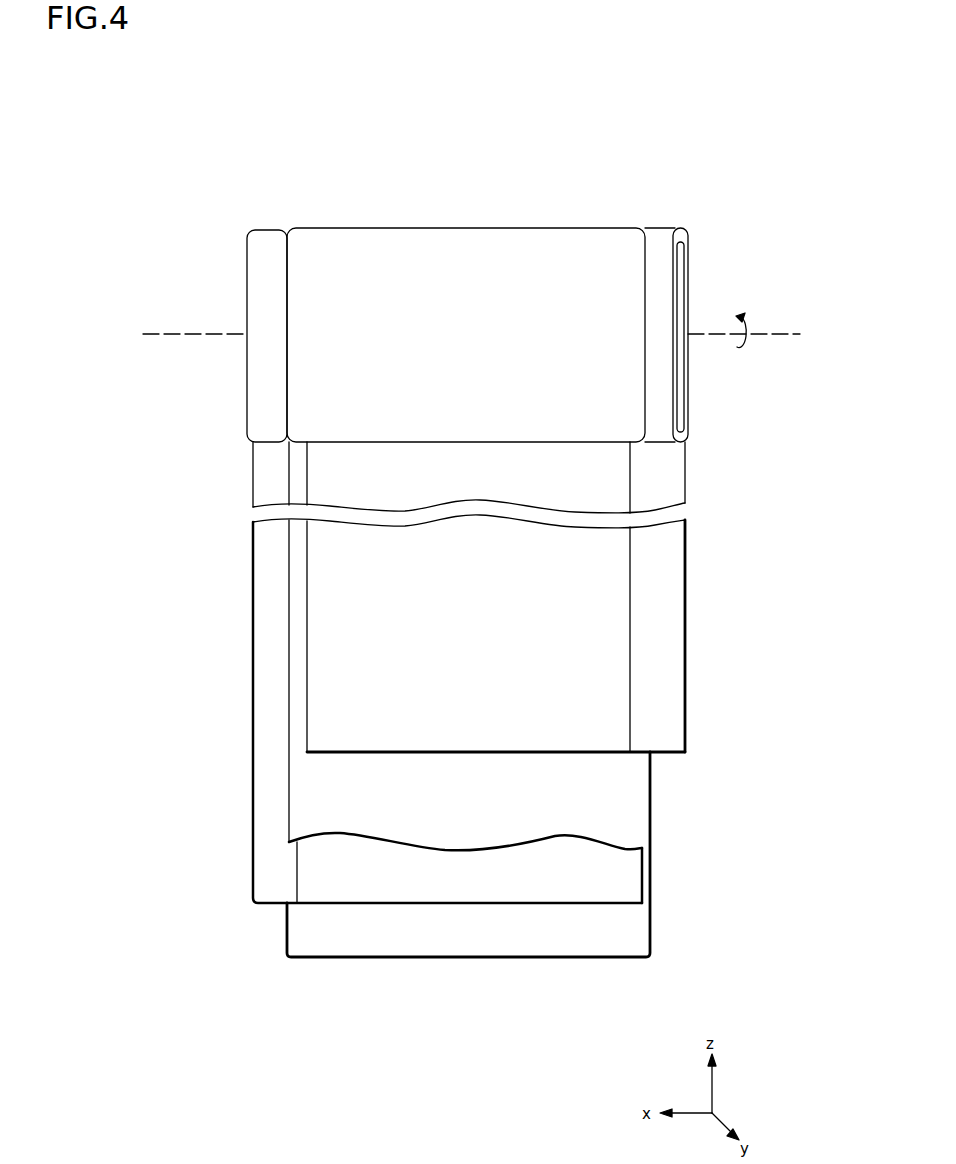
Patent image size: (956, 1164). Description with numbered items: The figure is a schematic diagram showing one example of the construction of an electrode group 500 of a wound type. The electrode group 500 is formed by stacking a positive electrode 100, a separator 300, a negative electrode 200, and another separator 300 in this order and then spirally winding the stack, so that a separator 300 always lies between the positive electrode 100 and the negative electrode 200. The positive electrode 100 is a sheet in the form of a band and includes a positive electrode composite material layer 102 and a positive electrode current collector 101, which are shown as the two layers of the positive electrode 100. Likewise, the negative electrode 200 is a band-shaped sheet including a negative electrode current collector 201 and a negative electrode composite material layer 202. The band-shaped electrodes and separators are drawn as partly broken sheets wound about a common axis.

The electrode group 500 is at (226, 174).
The positive electrode 100 is at (800, 528).
The positive electrode current collector 101 is at (668, 627).
The positive electrode composite material layer 102 is at (622, 577).
The negative electrode 200 is at (118, 742).
The negative electrode current collector 201 is at (253, 797).
The negative electrode composite material layer 202 is at (340, 884).
The separator 300 is at (290, 947).